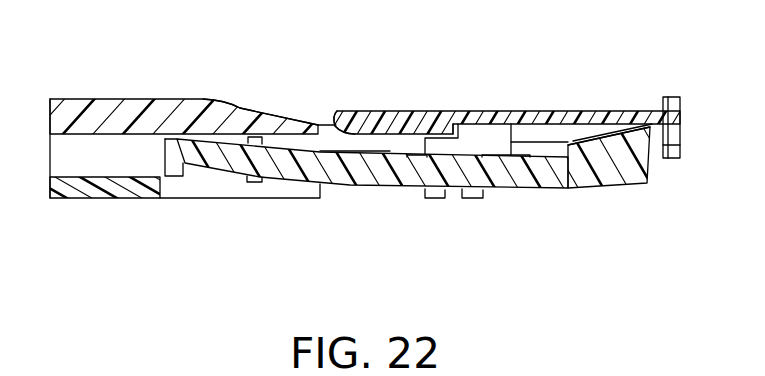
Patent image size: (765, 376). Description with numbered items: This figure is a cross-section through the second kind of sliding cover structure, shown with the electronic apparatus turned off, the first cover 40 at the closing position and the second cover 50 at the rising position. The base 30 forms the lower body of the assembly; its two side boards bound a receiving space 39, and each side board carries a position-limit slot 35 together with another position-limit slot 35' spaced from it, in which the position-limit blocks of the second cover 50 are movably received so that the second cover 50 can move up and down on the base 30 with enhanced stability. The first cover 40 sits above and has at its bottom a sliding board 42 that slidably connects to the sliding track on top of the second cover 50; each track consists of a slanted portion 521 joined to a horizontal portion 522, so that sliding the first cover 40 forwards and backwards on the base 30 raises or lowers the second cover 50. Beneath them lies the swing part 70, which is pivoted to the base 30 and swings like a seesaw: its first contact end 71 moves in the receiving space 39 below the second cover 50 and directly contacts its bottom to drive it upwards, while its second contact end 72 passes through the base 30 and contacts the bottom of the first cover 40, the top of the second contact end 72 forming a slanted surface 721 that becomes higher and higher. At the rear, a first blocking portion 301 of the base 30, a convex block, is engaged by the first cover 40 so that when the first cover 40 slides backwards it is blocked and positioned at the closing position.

The base 30 is at (93, 201).
The position-limit slot 35 is at (181, 194).
The position-limit slot 35' is at (266, 214).
The receiving space 39 is at (213, 185).
The first cover 40 is at (440, 110).
The sliding board 42 is at (356, 124).
The second cover 50 is at (93, 98).
The first contact end 71 is at (177, 139).
The slanted portion 521 is at (275, 114).
The horizontal portion 522 is at (192, 99).
The swing part 70 is at (377, 196).
The second contact end 72 is at (648, 178).
The slanted surface 721 is at (595, 139).
The first blocking portion 301 is at (673, 97).